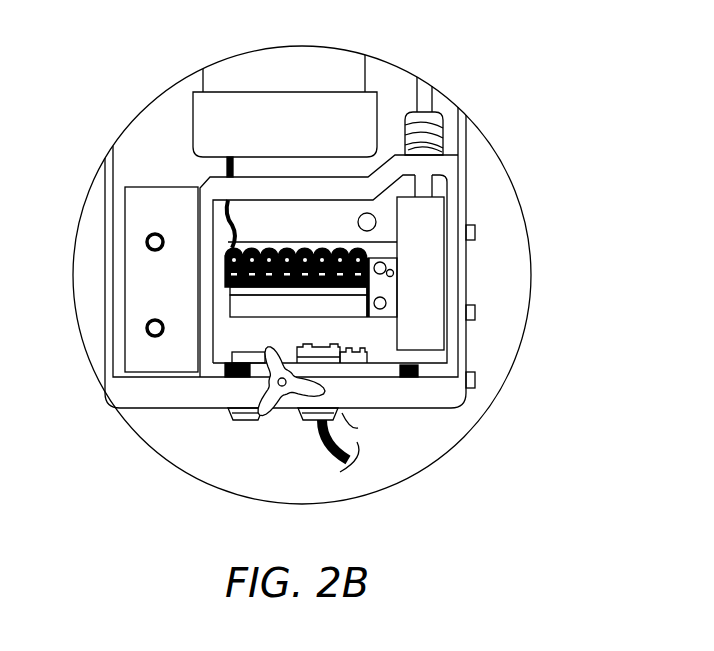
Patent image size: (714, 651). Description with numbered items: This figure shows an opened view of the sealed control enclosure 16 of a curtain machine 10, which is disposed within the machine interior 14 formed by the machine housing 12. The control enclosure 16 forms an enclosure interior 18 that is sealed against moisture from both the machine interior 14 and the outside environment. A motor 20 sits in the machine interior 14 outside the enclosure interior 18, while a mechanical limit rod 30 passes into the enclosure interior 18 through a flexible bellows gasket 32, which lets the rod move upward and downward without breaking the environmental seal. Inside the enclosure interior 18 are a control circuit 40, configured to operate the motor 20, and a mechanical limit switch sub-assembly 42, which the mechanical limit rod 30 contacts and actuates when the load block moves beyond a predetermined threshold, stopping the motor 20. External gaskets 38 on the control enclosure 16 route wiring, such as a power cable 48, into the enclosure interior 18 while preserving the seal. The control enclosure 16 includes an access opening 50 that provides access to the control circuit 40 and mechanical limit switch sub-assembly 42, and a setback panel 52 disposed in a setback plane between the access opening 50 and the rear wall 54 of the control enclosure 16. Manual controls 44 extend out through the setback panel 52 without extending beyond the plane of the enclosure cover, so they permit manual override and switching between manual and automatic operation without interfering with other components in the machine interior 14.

The curtain machine 10 is at (476, 191).
The machine housing 12 is at (467, 272).
The machine interior 14 is at (181, 160).
The control enclosure 16 is at (450, 358).
The enclosure interior 18 is at (288, 231).
The motor 20 is at (347, 62).
The mechanical limit rod 30 is at (423, 93).
The flexible bellows gasket 32 is at (438, 143).
The external gasket 38 is at (342, 417).
The control circuit 40 is at (250, 307).
The mechanical limit switch sub-assembly 42 is at (435, 235).
The manual controls 44 is at (146, 242).
The power cable 48 is at (325, 452).
The access opening 50 is at (445, 297).
The setback panel 52 is at (168, 218).
The rear wall 54 is at (345, 245).